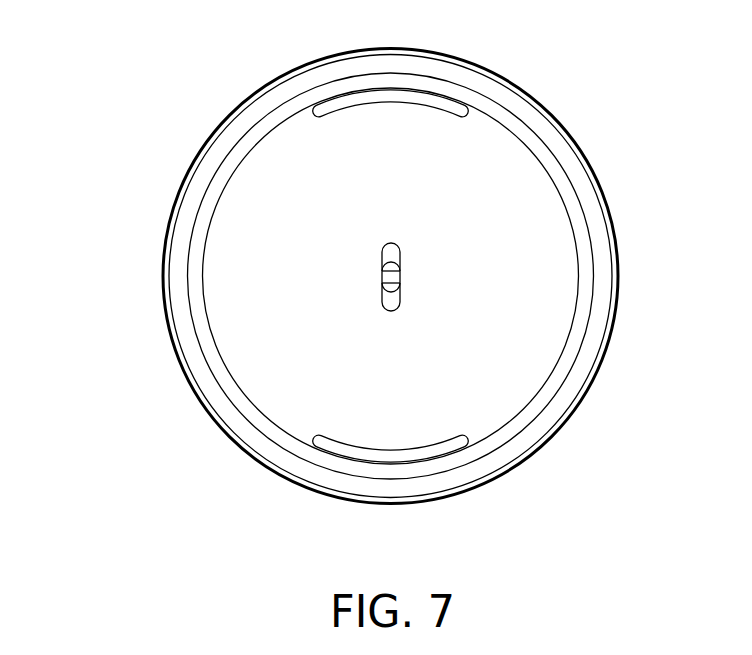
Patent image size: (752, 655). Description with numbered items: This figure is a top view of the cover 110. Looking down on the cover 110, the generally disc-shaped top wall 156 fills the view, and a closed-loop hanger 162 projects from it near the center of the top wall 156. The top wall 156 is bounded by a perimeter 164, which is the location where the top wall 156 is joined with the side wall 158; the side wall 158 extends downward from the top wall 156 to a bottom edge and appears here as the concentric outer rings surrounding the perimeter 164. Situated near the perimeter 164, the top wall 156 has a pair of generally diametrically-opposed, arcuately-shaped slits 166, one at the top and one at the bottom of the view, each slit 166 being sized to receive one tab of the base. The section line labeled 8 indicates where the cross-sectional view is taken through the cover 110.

The cover 110 is at (156, 101).
The top wall 156 is at (483, 182).
The side wall 158 is at (608, 342).
The closed-loop hanger 162 is at (382, 294).
The perimeter 164 is at (552, 177).
The arcuately-shaped slits 166 is at (387, 98).
The section line 8- 8 is at (109, 215).